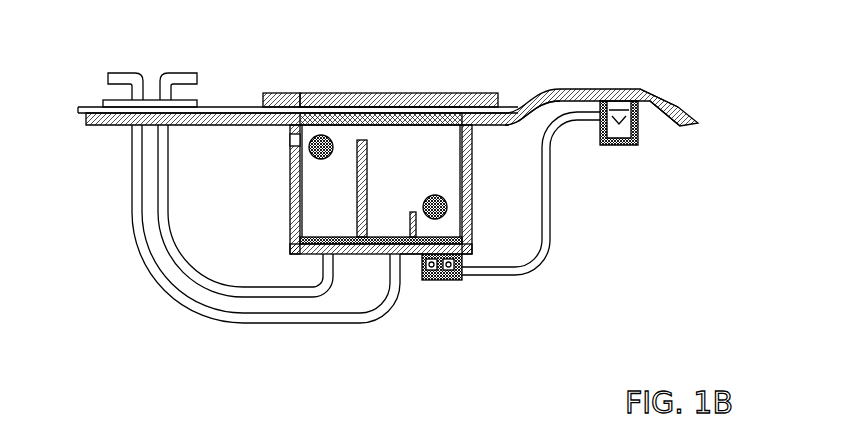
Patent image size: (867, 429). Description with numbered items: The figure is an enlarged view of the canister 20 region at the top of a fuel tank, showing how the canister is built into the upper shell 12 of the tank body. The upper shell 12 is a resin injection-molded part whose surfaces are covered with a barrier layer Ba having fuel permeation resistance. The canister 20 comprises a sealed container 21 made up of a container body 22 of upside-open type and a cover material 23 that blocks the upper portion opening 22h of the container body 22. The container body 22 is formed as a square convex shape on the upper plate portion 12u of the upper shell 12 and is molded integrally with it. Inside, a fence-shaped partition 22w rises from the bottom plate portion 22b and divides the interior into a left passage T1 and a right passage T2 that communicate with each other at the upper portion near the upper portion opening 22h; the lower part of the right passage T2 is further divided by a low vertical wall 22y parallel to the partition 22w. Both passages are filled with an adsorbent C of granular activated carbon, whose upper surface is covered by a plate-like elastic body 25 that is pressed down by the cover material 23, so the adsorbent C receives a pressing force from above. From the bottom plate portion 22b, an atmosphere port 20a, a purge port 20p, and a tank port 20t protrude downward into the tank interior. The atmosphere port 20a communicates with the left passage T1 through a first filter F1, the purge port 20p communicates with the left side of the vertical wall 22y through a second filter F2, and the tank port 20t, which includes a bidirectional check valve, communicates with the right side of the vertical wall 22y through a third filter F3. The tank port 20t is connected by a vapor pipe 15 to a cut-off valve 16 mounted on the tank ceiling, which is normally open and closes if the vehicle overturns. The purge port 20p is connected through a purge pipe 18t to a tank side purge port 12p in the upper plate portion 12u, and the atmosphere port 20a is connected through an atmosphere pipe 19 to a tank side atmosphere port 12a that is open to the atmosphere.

The upper shell 12 is at (231, 105).
The tank side purge port 12p is at (120, 73).
The tank side atmosphere port 12a is at (180, 73).
The upper plate portion 12u is at (626, 89).
The barrier layer Ba is at (580, 89).
The canister 20 is at (308, 92).
The container 21 is at (283, 92).
The cover material 23 is at (395, 92).
The elastic body 25 is at (440, 92).
The container body 22 is at (318, 222).
The upper portion opening 22h is at (291, 141).
The partition 22w is at (370, 173).
The vertical wall 22y is at (415, 211).
The bottom plate portion 22b is at (365, 256).
The adsorbent C is at (333, 140).
The atmosphere pipe 19 is at (167, 176).
The purge pipe 18t is at (140, 237).
The atmosphere port 20a is at (321, 264).
The tank port 20t is at (440, 281).
The purge port 20p is at (407, 257).
The vapor pipe 15 is at (552, 211).
The cut-off valve 16 is at (622, 146).
The left passage T1 is at (328, 198).
The right passage T2 is at (446, 153).
The first filter F1 is at (293, 228).
The second filter F2 is at (410, 260).
The third filter F3 is at (444, 231).